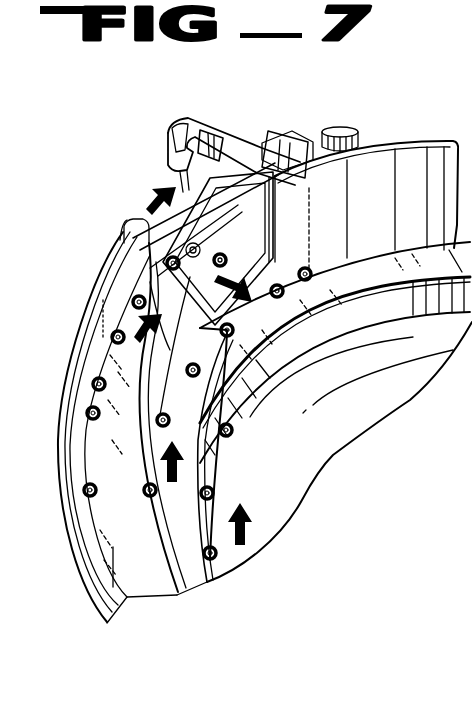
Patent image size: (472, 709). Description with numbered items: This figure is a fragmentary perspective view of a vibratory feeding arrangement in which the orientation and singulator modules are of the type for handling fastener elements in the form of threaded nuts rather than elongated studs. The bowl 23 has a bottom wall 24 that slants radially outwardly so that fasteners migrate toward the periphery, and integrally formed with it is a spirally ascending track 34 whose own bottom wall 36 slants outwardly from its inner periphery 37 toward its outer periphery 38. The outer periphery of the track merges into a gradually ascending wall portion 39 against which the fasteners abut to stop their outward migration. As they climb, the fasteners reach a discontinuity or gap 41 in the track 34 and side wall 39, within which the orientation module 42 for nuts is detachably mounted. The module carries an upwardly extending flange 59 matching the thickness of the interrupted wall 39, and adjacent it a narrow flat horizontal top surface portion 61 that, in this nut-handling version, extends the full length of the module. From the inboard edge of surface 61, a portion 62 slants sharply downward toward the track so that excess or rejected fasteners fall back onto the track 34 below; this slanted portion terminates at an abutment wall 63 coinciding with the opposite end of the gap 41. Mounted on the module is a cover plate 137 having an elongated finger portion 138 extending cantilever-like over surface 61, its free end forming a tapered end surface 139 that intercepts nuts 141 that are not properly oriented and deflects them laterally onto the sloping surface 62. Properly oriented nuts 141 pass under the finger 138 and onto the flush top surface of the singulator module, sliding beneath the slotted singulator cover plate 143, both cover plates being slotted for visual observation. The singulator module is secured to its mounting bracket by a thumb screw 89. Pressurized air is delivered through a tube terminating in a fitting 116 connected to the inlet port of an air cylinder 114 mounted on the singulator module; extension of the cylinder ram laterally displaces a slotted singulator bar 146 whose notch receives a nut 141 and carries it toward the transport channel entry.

The bowl 23 is at (76, 587).
The bottom wall 24 is at (346, 433).
The spirally ascending track 34 is at (183, 570).
The bottom wall of the track 36 is at (385, 281).
The inner periphery 37 is at (367, 297).
The outer periphery 38 is at (339, 272).
The circumferentially ascending wall portion 39 is at (379, 214).
The gap 41 is at (148, 272).
The orientation module 42 is at (122, 211).
The upwardly extending flange 59 is at (180, 184).
The flat horizontal top surface portion 61 is at (142, 284).
The laterally slanted top surface portion 62 is at (275, 242).
The abutment wall 63 is at (272, 222).
The thumb screw 89 is at (354, 128).
The air cylinder 114 is at (233, 128).
The fitting 116 is at (180, 122).
The cover plate 137 is at (173, 153).
The elongated finger portion 138 is at (202, 246).
The tapered end surface 139 is at (214, 265).
The fastener nuts 141 is at (99, 420).
The singulator cover plate 143 is at (253, 128).
The slotted singulator bar 146 is at (290, 130).